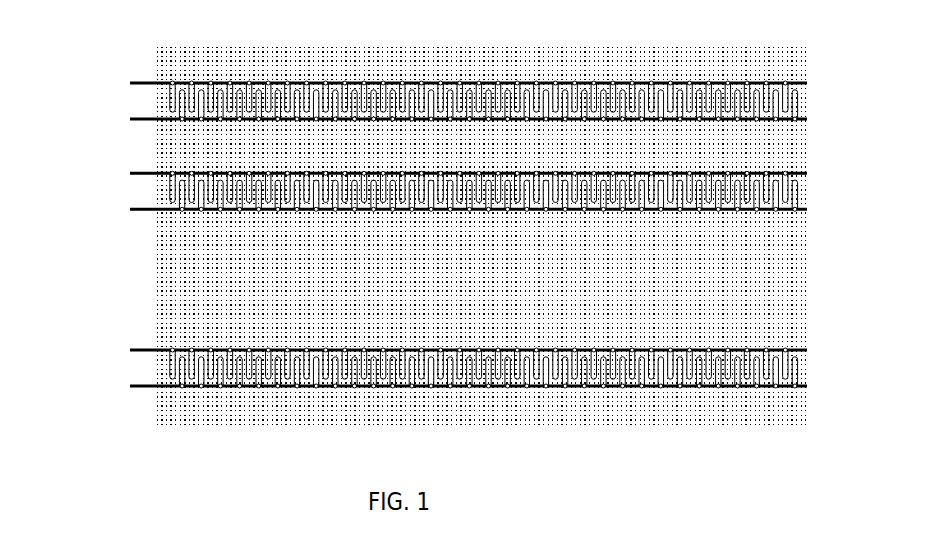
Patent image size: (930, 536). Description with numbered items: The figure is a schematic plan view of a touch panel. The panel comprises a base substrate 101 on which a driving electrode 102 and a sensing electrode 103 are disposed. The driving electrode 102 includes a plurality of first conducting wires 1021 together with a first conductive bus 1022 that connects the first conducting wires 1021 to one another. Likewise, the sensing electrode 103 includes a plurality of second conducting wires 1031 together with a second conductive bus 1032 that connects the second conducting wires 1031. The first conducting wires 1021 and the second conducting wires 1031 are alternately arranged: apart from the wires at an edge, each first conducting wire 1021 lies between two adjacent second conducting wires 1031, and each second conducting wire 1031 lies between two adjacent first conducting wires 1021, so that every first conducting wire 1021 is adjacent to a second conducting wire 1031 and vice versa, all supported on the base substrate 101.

The base substrate 101 is at (175, 269).
The driving electrode 102 is at (412, 83).
The first conducting wires 1021 is at (178, 110).
The first conductive bus 1022 is at (134, 83).
The sensing electrode 103 is at (412, 114).
The second conducting wires 1031 is at (190, 113).
The second conductive bus 1032 is at (134, 119).